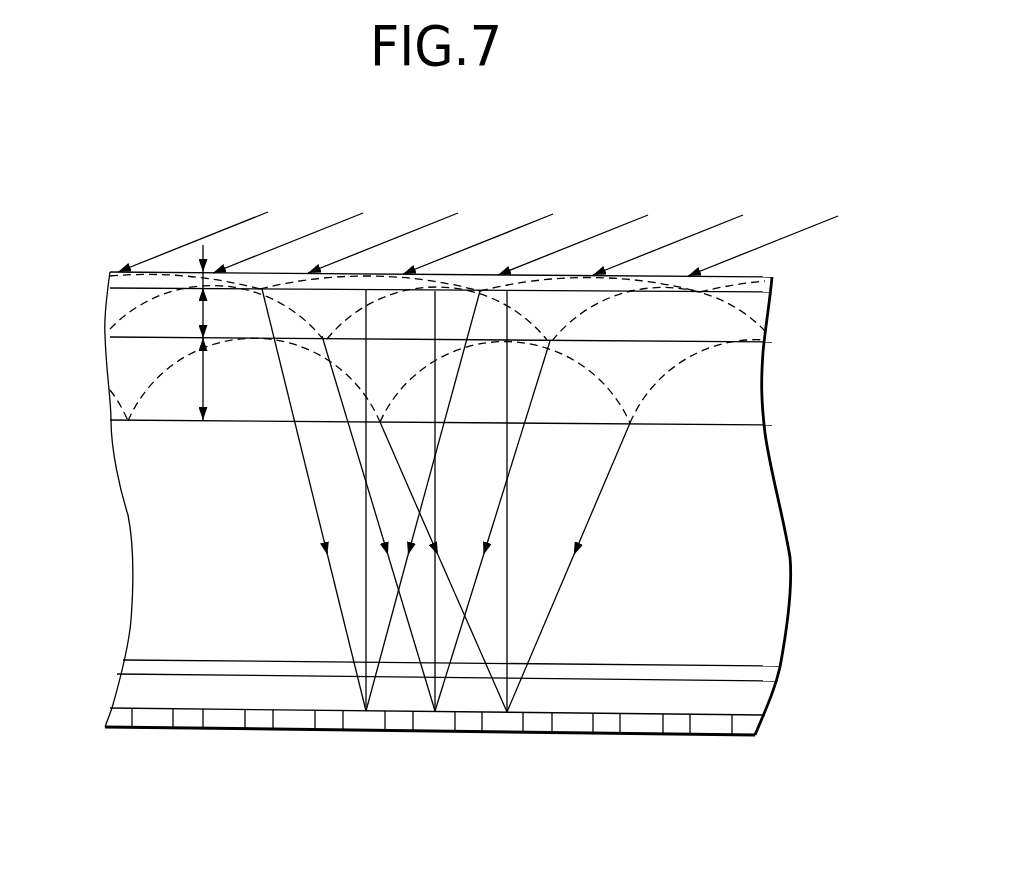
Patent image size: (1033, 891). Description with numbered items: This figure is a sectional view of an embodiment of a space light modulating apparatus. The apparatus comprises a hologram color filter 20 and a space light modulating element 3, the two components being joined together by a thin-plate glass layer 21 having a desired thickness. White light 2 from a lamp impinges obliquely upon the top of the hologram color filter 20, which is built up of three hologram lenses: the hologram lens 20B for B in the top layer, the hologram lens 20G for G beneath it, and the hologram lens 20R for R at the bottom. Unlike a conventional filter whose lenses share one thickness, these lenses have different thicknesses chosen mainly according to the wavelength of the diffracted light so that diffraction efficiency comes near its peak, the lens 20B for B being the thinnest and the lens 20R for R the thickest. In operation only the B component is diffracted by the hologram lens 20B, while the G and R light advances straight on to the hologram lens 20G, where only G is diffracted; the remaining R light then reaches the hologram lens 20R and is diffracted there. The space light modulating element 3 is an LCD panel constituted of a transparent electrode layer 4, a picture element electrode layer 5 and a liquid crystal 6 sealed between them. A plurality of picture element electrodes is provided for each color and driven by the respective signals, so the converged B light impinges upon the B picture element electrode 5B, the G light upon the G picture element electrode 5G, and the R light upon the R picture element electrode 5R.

The incident light 2 is at (398, 237).
The hologram color filter 20 is at (78, 272).
The hologram lens for B 20B is at (765, 285).
The hologram lens for G 20G is at (752, 332).
The hologram lens for R 20R is at (748, 405).
The thin-plate glass layer 21 is at (765, 558).
The space light modulating element 3 is at (83, 653).
The transparent electrode layer 4 is at (777, 670).
The liquid crystal 6 is at (768, 703).
The picture element electrode layer 5 is at (445, 780).
The R picture element electrode 5R is at (295, 730).
The G picture element electrode 5G is at (436, 731).
The B picture element electrode 5B is at (367, 730).